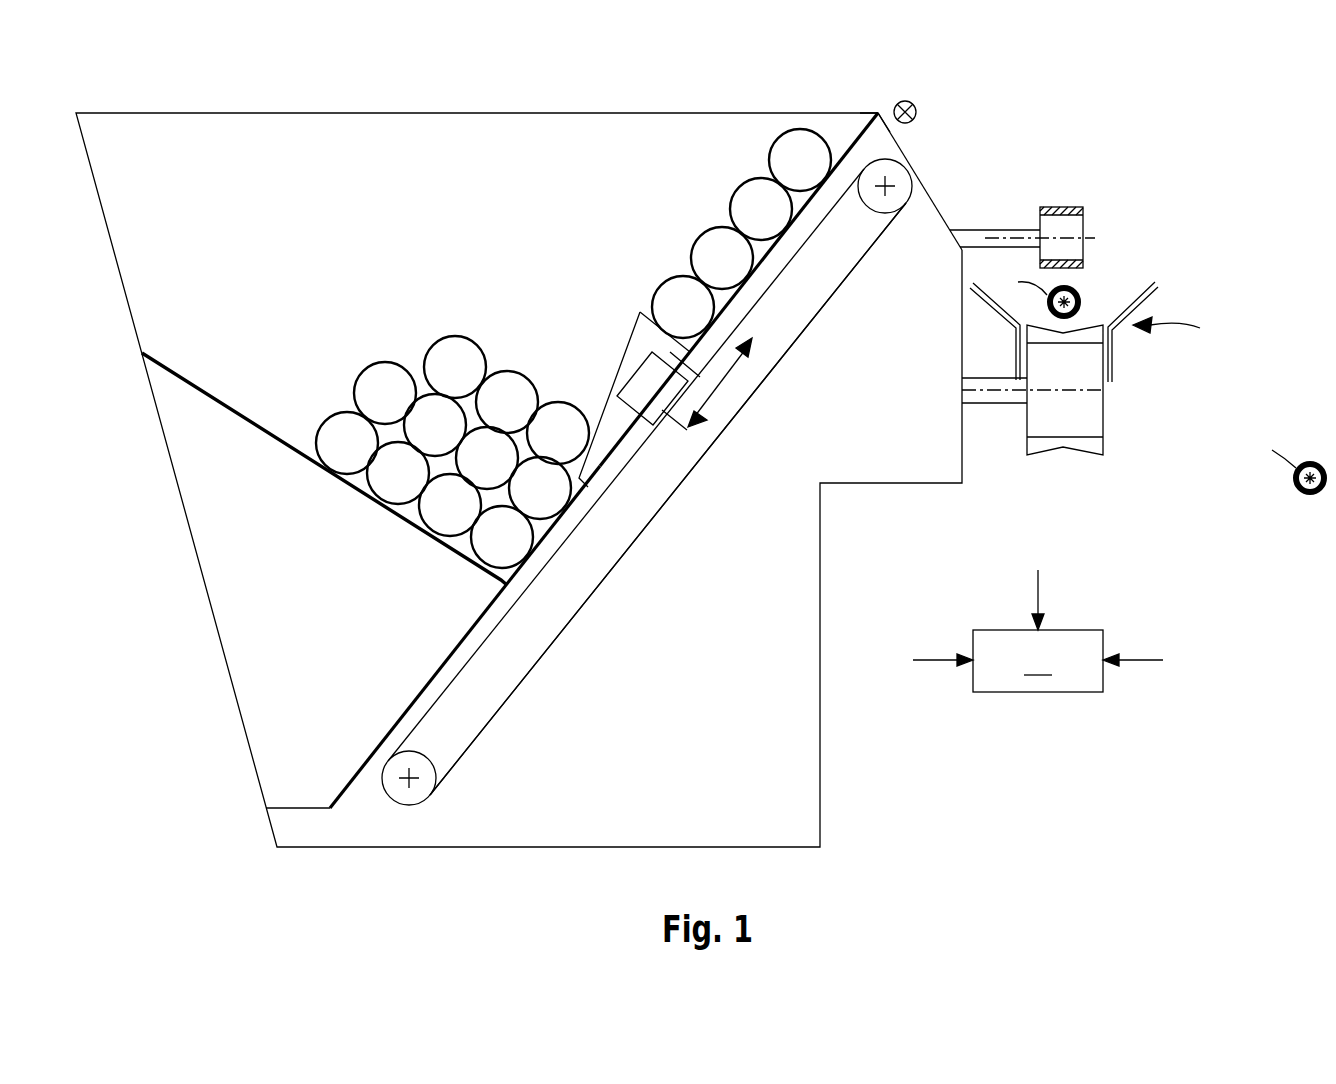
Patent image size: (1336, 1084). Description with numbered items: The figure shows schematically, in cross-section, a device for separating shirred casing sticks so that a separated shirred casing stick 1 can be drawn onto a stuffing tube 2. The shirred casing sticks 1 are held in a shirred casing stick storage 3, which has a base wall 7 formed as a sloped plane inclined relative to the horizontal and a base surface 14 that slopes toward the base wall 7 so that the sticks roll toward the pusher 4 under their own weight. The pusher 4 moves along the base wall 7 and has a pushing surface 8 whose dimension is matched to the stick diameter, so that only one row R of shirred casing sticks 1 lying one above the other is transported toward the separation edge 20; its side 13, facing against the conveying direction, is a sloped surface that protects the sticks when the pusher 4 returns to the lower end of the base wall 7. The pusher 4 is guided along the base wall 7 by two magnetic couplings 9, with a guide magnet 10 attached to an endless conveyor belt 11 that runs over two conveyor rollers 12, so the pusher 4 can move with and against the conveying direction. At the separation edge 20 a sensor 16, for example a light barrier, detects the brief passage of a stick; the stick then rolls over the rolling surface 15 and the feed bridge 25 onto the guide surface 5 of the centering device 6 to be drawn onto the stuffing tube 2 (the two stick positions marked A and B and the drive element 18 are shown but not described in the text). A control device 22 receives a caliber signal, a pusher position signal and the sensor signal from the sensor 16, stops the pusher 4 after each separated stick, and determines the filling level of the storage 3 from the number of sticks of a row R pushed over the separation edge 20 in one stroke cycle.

The shirred casing stick 1 is at (524, 382).
The stuffing tube 2 is at (1082, 292).
The shirred casing stick storage 3 is at (136, 324).
The pusher 4 is at (712, 374).
The guide surface 5 is at (1110, 340).
The centering device 6 is at (1177, 329).
The base wall 7 is at (600, 465).
The pushing surface 8 is at (650, 302).
The magnetic coupling 9 is at (634, 427).
The guide magnet 10 is at (661, 396).
The endless conveyor belt 11 is at (576, 614).
The conveyor roller 12 is at (437, 780).
The side of pusher 13 is at (638, 318).
The base surface 14 is at (188, 393).
The rolling surface 15 is at (903, 152).
The sensor 16 is at (918, 112).
The drive 18 is at (1065, 222).
The separation edge 20 is at (882, 108).
The control device 22 is at (1041, 613).
The feed bridge 25 is at (988, 302).
The row R is at (706, 203).
The position A is at (1021, 277).
The position B is at (1272, 450).